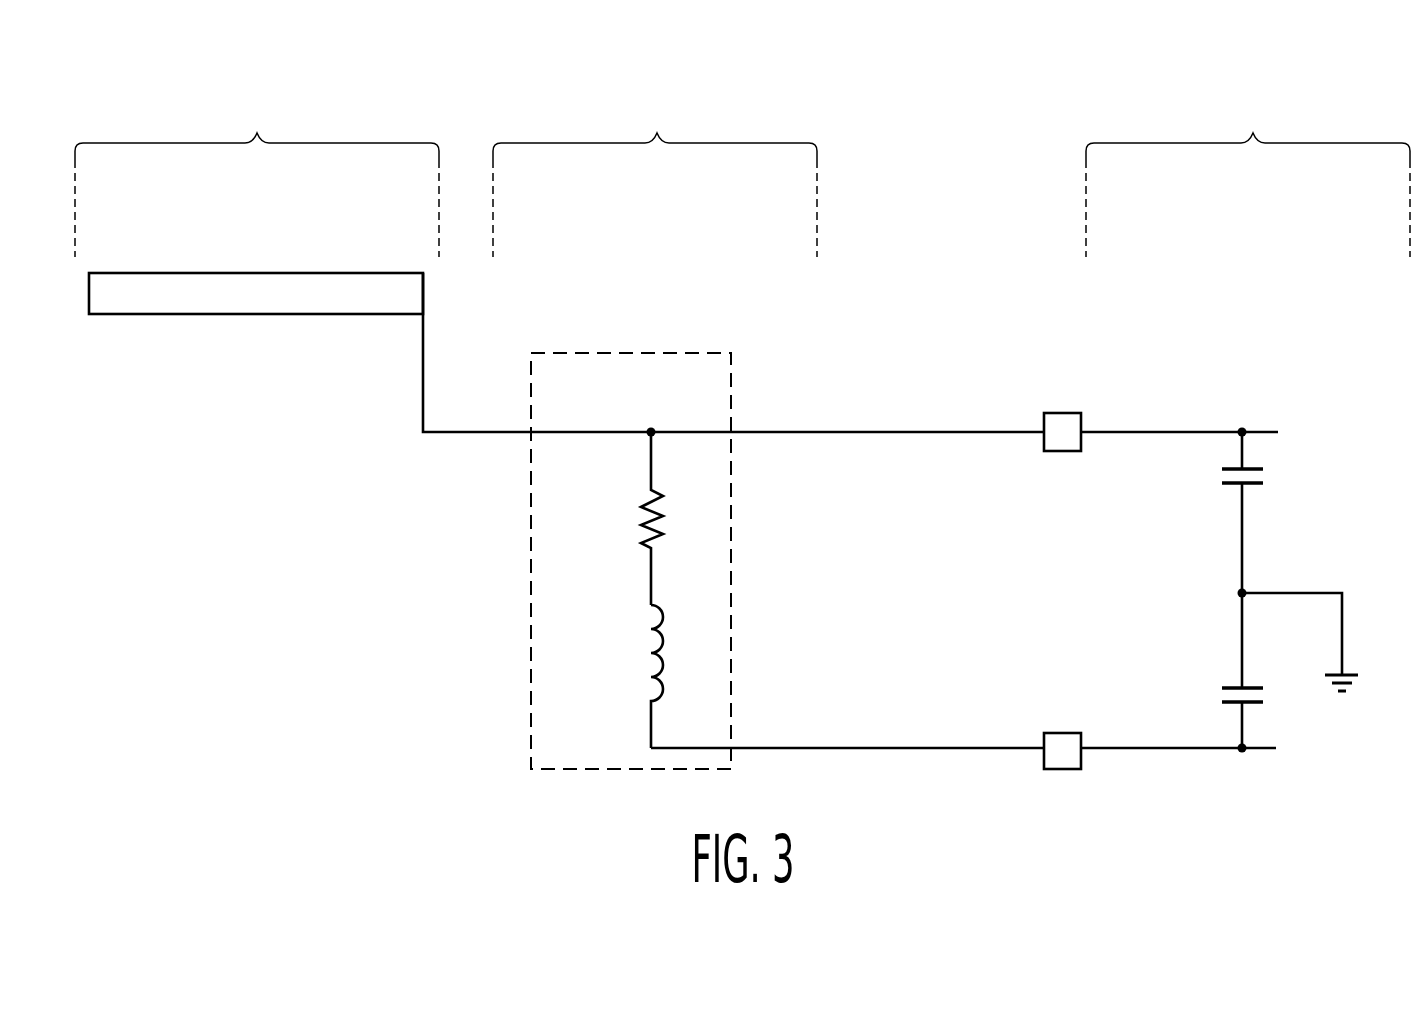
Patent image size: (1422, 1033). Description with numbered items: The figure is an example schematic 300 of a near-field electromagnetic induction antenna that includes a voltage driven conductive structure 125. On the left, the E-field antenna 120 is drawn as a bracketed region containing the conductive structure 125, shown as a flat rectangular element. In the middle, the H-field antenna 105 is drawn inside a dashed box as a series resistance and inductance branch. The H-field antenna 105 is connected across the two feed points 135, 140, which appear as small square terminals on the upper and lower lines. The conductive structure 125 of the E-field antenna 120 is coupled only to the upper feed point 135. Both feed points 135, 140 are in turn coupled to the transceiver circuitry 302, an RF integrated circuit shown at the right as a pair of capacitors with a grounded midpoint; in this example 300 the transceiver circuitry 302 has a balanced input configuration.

The example schematic 300 is at (118, 99).
The E-field antenna 120 is at (257, 256).
The voltage driven conductive structure 125 is at (245, 316).
The H-field antenna 105 is at (655, 432).
The feed point 135 is at (1060, 412).
The feed point 140 is at (1063, 733).
The transceiver circuitry (RF-IC) 302 is at (1248, 425).